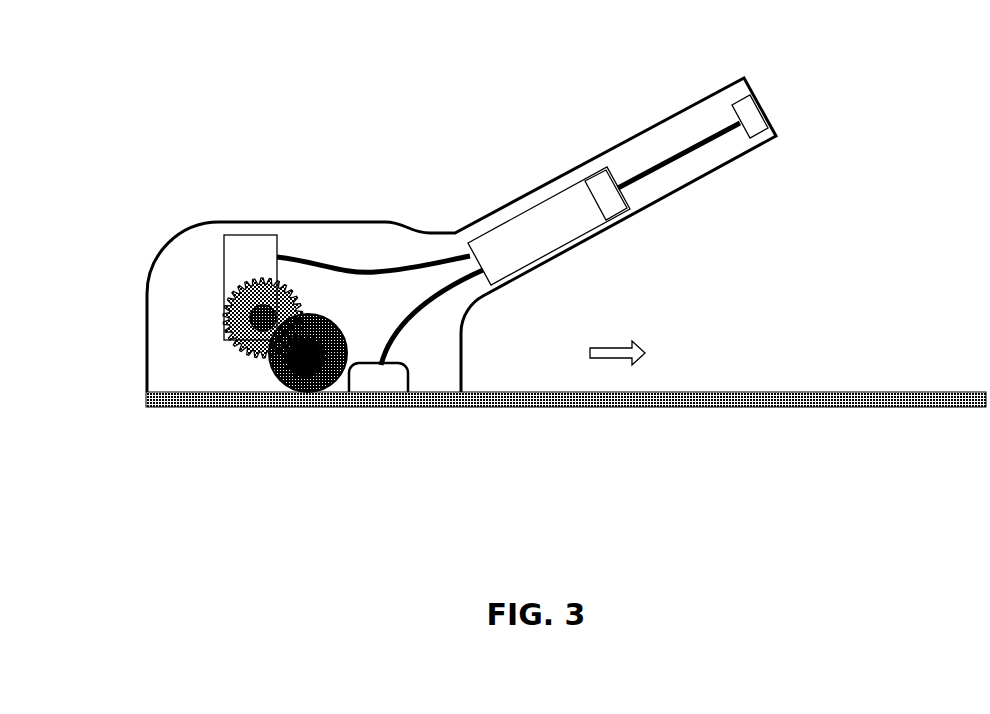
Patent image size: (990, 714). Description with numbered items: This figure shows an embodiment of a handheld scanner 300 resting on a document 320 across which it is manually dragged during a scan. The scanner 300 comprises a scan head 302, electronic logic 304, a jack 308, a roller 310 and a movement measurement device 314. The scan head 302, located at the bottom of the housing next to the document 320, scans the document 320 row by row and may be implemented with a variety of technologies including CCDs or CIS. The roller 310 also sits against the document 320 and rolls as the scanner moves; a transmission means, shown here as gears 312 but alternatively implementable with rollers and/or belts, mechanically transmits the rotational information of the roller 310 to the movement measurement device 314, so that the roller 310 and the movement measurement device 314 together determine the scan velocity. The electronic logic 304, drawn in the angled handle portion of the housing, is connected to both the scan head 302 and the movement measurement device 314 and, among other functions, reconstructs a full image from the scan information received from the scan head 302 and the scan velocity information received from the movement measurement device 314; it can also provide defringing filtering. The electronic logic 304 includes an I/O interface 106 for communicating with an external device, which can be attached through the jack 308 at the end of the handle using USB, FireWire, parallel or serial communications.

The scanner 300 is at (909, 88).
The scan head 302 is at (378, 378).
The electronic logic 304 is at (548, 225).
The I/O interface 106 is at (606, 193).
The jack 308 is at (753, 115).
The roller 310 is at (308, 385).
The gears 312 is at (262, 337).
The movement measurement device 314 is at (252, 248).
The document 320 is at (574, 398).